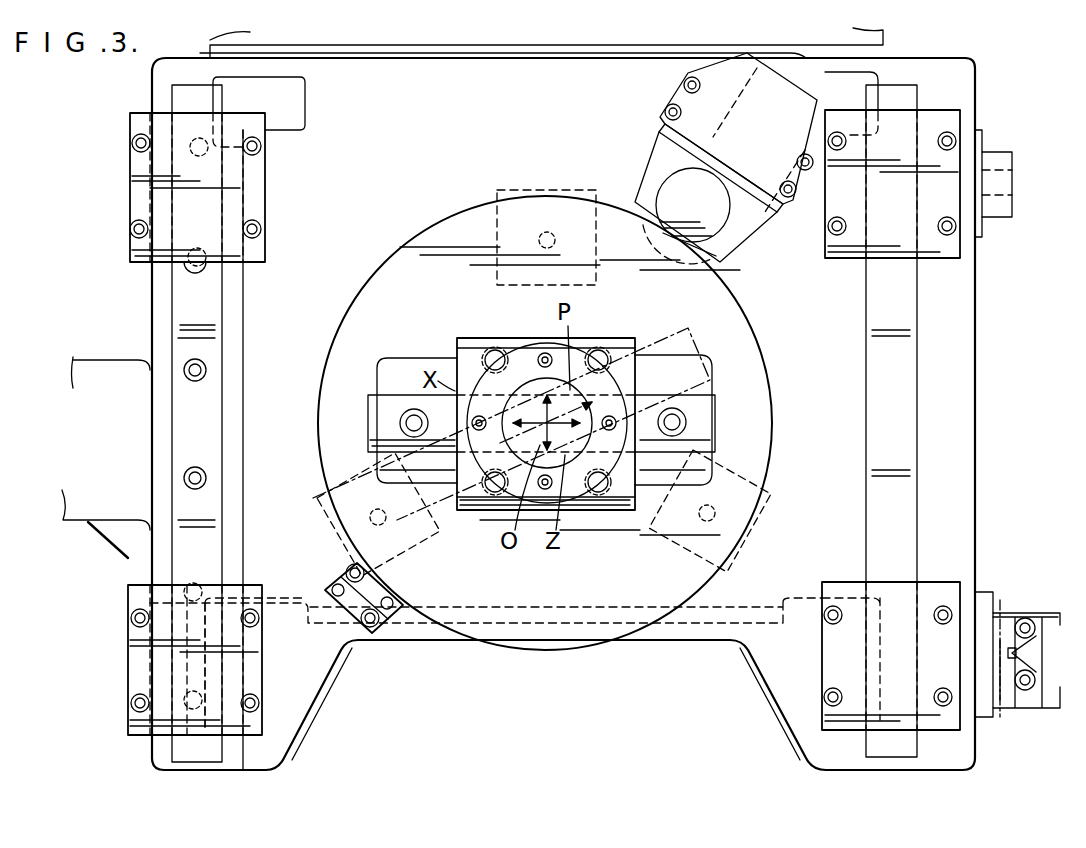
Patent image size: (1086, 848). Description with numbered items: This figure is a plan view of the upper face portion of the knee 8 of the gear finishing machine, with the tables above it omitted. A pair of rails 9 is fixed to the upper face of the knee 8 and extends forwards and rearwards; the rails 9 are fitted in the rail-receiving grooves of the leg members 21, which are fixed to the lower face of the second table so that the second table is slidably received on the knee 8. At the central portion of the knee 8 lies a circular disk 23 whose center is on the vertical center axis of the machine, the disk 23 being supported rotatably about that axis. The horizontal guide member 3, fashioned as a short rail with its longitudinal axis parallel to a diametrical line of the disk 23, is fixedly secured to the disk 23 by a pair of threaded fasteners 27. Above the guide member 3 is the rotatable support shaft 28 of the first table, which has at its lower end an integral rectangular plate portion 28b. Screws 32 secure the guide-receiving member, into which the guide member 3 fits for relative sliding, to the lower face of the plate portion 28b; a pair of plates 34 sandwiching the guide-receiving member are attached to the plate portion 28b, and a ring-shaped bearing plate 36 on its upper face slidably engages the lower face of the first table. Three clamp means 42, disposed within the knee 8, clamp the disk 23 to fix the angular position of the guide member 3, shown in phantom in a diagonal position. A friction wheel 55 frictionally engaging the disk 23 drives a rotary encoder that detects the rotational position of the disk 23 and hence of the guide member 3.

The guide member 3 is at (700, 433).
The knee 8 is at (945, 535).
The rails 9 is at (190, 303).
The leg members 21 is at (205, 217).
The circular disk 23 is at (410, 270).
The threaded fasteners 27 is at (410, 410).
The rotatable support shaft 28 is at (531, 385).
The rectangular plate portion 28b is at (470, 365).
The screws 32 is at (605, 352).
The plates 34 is at (480, 338).
The ring-shaped bearing plate 36 is at (603, 455).
The clamp means 42 is at (540, 188).
The friction wheel 55 is at (720, 210).